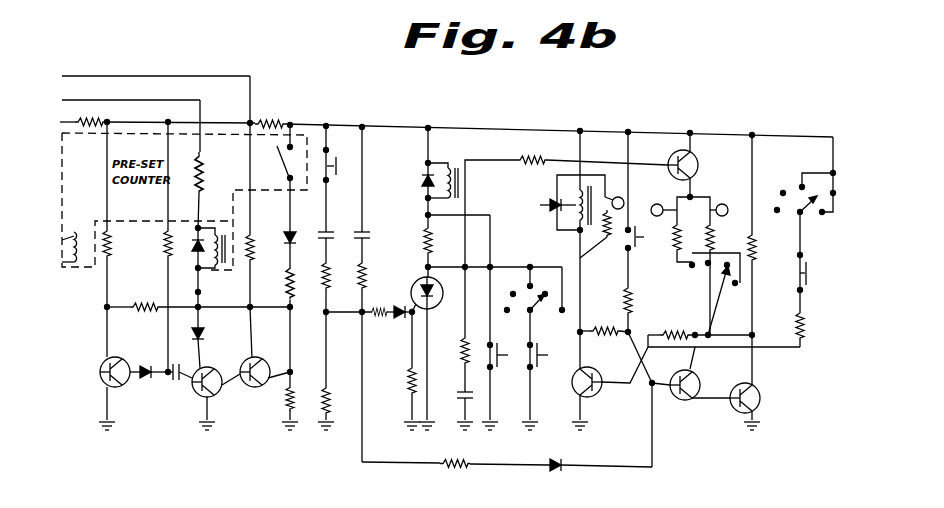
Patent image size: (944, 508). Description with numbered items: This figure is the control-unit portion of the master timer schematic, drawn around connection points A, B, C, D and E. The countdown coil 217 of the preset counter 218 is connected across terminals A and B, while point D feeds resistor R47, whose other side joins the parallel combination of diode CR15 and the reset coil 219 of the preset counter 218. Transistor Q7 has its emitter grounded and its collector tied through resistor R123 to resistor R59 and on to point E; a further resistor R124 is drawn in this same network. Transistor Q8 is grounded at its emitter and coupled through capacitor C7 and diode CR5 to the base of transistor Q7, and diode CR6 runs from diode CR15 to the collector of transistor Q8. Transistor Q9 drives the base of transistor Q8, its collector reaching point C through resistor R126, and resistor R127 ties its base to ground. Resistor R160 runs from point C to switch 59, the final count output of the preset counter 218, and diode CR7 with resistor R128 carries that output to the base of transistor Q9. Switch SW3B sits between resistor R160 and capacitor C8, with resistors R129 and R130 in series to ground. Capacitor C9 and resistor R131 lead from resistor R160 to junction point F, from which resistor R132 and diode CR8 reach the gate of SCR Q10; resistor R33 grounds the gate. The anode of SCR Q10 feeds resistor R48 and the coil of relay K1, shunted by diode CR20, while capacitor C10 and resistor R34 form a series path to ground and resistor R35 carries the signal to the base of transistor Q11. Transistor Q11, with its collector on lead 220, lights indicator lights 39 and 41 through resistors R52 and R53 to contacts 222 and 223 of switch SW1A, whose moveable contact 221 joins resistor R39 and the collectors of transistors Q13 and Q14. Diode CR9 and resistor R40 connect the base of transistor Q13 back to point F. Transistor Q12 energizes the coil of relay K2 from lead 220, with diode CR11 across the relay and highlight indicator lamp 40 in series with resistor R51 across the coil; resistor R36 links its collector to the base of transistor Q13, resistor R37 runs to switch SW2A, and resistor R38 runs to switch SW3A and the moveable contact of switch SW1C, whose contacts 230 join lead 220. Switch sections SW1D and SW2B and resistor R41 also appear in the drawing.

The connection point C is at (66, 76).
The connection point D is at (88, 88).
The connection point E is at (64, 122).
The connection point A is at (60, 238).
The connection point B is at (60, 262).
The junction point F is at (339, 333).
The countdown coil 217 is at (72, 264).
The preset counter 218 is at (216, 149).
The reset coil 219 is at (214, 234).
The lead 220 is at (533, 112).
The moveable contact 221 is at (706, 282).
The contact 222 is at (692, 268).
The contact 223 is at (740, 279).
The contacts 230 is at (830, 171).
The indicator light 39 is at (658, 204).
The highlight indicator lamp 40 is at (616, 210).
The indicator light 41 is at (726, 204).
The switch 59 is at (274, 163).
The resistor R59 is at (92, 124).
The resistor R160 is at (266, 124).
The resistor R47 is at (203, 176).
The resistor R123 is at (168, 252).
The resistor R124 is at (150, 294).
The resistor R126 is at (266, 248).
The resistor R128 is at (286, 283).
The resistor R127 is at (288, 396).
The resistor R129 is at (326, 268).
The resistor R130 is at (324, 416).
The resistor R131 is at (366, 275).
The resistor R132 is at (382, 316).
The resistor R33 is at (410, 388).
The resistor R34 is at (464, 348).
The resistor R35 is at (533, 158).
The resistor R36 is at (612, 320).
The resistor R37 is at (630, 292).
The resistor R38 is at (802, 314).
The resistor R39 is at (673, 339).
The resistor R40 is at (445, 466).
The resistor R41 is at (756, 244).
The resistor R48 is at (430, 244).
The resistor R51 is at (607, 246).
The resistor R52 is at (675, 232).
The resistor R53 is at (713, 236).
The diode CR5 is at (150, 368).
The diode CR6 is at (199, 338).
The diode CR7 is at (288, 236).
The diode CR8 is at (400, 318).
The diode CR9 is at (553, 468).
The diode CR11 is at (542, 205).
The diode CR15 is at (196, 255).
The diode CR20 is at (424, 182).
The capacitor C7 is at (173, 378).
The capacitor C8 is at (328, 236).
The capacitor C9 is at (366, 236).
The capacitor C10 is at (463, 394).
The transistor Q7 is at (100, 372).
The transistor Q8 is at (208, 400).
The transistor Q9 is at (260, 364).
The SCR Q10 is at (422, 286).
The transistor Q11 is at (698, 166).
The transistor Q12 is at (598, 396).
The transistor Q13 is at (694, 379).
The transistor Q14 is at (760, 398).
The relay K1 is at (442, 170).
The relay K2 is at (578, 208).
The switch SW1A is at (720, 288).
The switch SW1C is at (806, 216).
The switch section SW1D is at (540, 300).
The switch SW2A is at (638, 252).
The switch section SW2B is at (508, 360).
The switch SW3A is at (826, 252).
The switch SW3B is at (330, 178).